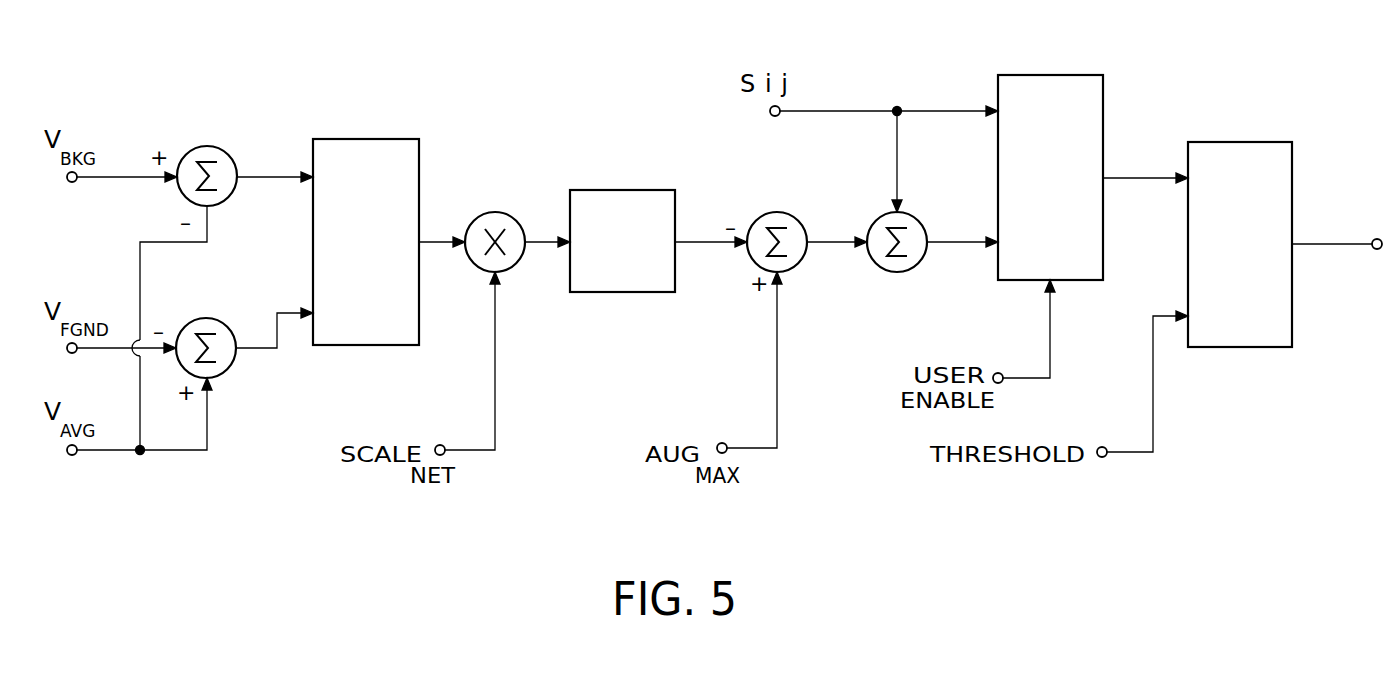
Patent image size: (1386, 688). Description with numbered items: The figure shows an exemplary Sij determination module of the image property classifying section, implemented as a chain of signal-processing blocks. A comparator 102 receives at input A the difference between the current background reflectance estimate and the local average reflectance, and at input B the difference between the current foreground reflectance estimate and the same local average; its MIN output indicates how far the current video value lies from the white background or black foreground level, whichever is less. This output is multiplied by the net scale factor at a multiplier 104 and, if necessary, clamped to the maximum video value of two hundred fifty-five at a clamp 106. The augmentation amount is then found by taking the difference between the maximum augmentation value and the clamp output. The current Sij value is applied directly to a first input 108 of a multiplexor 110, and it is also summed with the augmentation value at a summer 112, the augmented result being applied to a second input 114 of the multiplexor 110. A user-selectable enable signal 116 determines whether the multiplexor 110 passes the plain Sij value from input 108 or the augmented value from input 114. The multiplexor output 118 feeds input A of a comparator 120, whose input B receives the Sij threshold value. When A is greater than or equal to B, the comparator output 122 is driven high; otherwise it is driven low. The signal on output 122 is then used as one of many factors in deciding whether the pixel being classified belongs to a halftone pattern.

The comparator 102 is at (335, 139).
The multiplier 104 is at (488, 211).
The clamp 106 is at (597, 190).
The first input of the multiplexor 108 is at (932, 110).
The multiplexor 110 is at (1022, 75).
The summer 112 is at (902, 273).
The second input of the multiplexor 114 is at (970, 243).
The user-selectable enable signal 116 is at (1052, 340).
The multiplexor output 118 is at (1120, 178).
The comparator 120 is at (1215, 142).
The comparator output 122 is at (1308, 244).